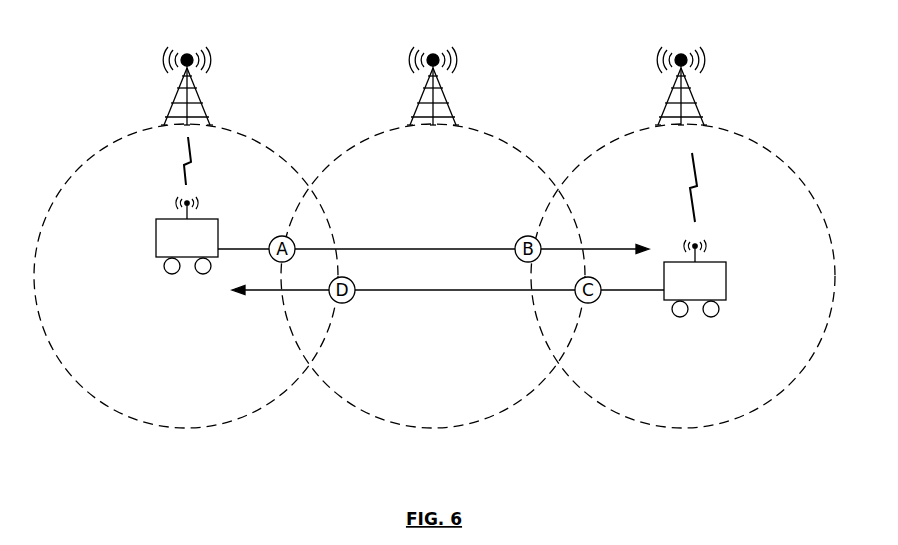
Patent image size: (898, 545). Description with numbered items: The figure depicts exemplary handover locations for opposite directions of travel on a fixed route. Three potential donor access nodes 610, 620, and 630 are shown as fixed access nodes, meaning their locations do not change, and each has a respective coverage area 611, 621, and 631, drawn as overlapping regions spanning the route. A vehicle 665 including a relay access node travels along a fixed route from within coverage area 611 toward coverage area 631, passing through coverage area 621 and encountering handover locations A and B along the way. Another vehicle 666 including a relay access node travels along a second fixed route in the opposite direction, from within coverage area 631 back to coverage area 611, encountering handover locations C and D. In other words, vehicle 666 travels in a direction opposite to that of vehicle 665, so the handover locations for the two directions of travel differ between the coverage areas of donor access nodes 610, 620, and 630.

The donor access node 610 is at (172, 104).
The donor access node 620 is at (418, 104).
The donor access node 630 is at (665, 104).
The coverage area 611 is at (99, 147).
The coverage area 621 is at (346, 147).
The coverage area 631 is at (593, 147).
The vehicle 665 is at (187, 235).
The vehicle 666 is at (695, 278).